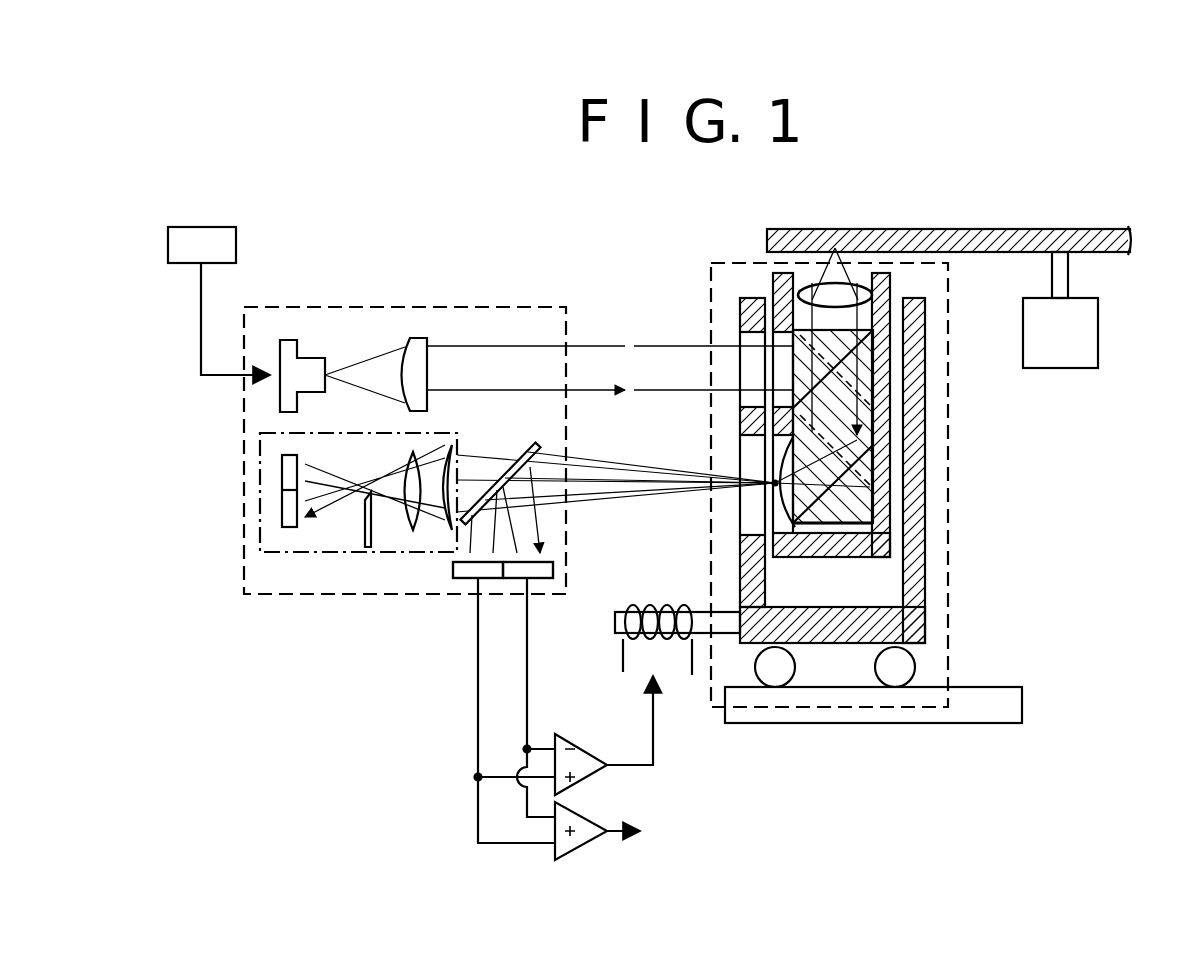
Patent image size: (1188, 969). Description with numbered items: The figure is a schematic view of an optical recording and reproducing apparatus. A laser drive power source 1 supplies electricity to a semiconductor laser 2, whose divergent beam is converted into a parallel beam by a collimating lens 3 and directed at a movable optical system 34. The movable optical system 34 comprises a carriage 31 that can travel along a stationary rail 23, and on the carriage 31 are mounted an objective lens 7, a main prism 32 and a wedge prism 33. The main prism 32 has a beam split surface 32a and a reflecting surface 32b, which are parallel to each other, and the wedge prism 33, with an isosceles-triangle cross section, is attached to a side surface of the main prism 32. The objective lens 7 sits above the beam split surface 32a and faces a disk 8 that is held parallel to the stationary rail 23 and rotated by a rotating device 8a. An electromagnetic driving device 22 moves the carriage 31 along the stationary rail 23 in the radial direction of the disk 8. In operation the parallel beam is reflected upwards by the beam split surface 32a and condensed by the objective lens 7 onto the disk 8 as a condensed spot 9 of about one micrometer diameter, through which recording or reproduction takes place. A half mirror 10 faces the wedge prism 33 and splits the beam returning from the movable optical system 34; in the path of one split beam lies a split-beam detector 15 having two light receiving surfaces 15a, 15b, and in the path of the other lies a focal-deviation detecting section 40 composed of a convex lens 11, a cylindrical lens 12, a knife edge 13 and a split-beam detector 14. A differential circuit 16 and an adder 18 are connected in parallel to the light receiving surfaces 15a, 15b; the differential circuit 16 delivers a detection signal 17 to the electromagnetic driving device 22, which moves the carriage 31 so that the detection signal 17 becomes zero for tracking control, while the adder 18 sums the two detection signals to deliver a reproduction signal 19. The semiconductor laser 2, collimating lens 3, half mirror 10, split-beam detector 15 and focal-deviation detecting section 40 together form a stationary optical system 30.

The laser drive power source 1 is at (233, 228).
The semiconductor laser 2 is at (292, 340).
The collimating lens 3 is at (415, 338).
The stationary optical system 30 is at (550, 307).
The focal-deviation detecting section 40 is at (258, 464).
The split-beam detector 14 is at (282, 524).
The knife edge 13 is at (365, 540).
The cylindrical lens 12 is at (415, 530).
The convex lens 11 is at (447, 530).
The half mirror 10 is at (540, 452).
The split-beam detector 15 is at (505, 578).
The light receiving surface 15a is at (553, 578).
The light receiving surface 15b is at (475, 578).
The differential circuit 16 is at (598, 773).
The detection signal 17 is at (655, 757).
The adder 18 is at (585, 850).
The reproduction signal 19 is at (623, 832).
The electromagnetic driving device 22 is at (668, 645).
The movable optical system 34 is at (738, 262).
The carriage 31 is at (925, 612).
The stationary rail 23 is at (888, 724).
The main prism 32 is at (878, 412).
The beam split surface 32a is at (828, 372).
The reflecting surface 32b is at (868, 487).
The wedge prism 33 is at (772, 488).
The condensed spot 9 is at (837, 285).
The objective lens 7 is at (868, 285).
The disk 8 is at (1000, 229).
The rotating device 8a is at (1098, 337).